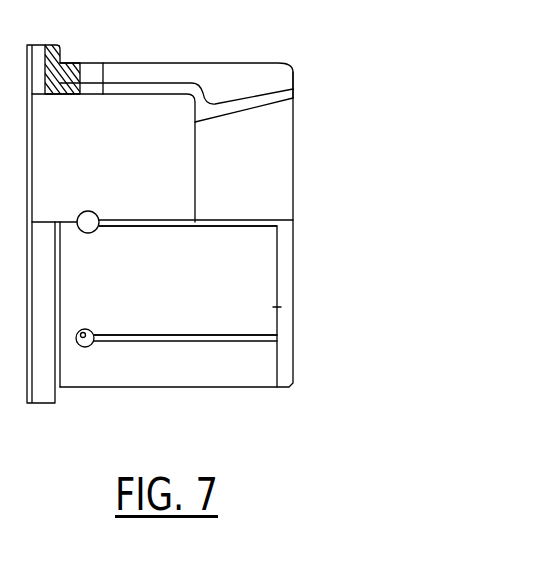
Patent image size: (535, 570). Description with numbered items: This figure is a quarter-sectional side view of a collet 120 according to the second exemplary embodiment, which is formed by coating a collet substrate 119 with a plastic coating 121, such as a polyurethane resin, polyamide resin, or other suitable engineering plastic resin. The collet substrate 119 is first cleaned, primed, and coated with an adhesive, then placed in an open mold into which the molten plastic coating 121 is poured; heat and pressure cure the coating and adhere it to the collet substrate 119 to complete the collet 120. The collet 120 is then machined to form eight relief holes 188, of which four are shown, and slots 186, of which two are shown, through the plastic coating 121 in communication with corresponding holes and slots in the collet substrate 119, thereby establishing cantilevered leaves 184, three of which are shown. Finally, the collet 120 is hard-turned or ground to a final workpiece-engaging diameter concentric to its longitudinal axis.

The collet 120 is at (427, 78).
The plastic coating 121 is at (298, 80).
The collet substrate 119 is at (298, 100).
The cantilevered leaves 184 is at (234, 75).
The slots 186 is at (208, 227).
The relief holes 188 is at (70, 83).